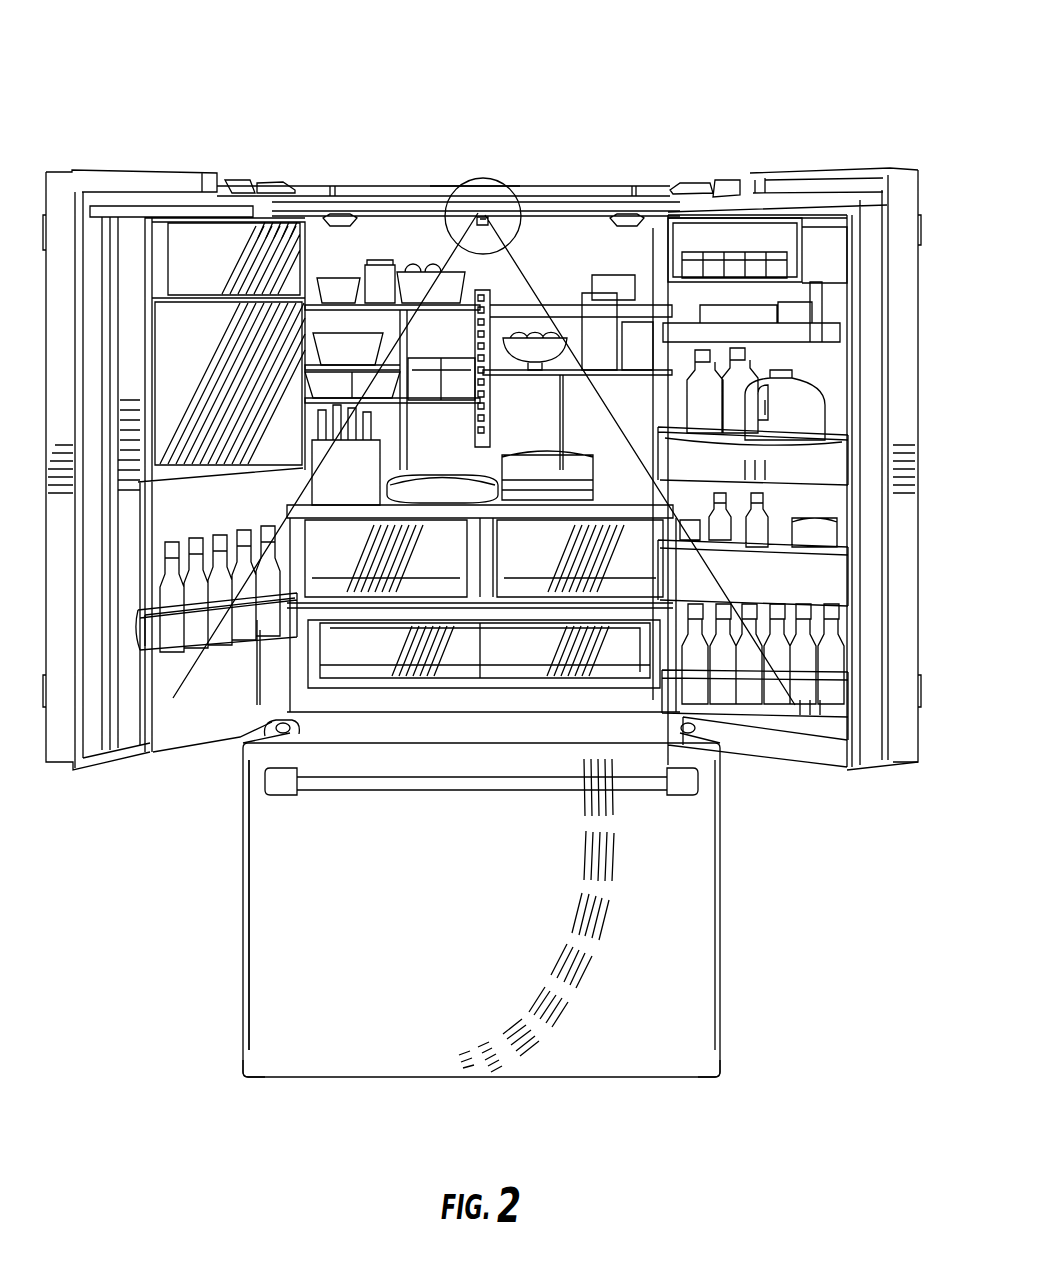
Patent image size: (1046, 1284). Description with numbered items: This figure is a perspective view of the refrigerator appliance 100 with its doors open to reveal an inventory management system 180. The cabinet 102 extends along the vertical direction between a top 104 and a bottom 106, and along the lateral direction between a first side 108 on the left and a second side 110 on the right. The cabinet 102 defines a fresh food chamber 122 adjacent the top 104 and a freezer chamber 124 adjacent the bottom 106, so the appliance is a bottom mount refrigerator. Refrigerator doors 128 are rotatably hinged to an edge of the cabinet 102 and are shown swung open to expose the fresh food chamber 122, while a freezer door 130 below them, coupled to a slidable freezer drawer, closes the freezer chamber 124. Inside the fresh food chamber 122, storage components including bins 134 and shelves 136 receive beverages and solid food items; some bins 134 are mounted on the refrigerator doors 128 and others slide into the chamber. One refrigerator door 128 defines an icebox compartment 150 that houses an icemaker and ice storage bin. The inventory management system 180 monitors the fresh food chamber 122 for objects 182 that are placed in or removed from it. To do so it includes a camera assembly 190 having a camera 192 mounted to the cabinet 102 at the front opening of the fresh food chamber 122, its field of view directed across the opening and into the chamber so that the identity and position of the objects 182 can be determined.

The refrigerator appliance 100 is at (860, 103).
The cabinet 102 is at (650, 192).
The top 104 is at (274, 423).
The bottom 106 is at (345, 1083).
The first side 108 is at (243, 1083).
The second side 110 is at (717, 1083).
The fresh food chamber 122 is at (578, 262).
The freezer chamber 124 is at (348, 892).
The refrigerator doors 128 is at (905, 565).
The freezer door 130 is at (510, 938).
The bins 134 is at (547, 562).
The shelves 136 is at (333, 300).
The icebox compartment 150 is at (210, 285).
The inventory management system 180 is at (472, 158).
The objects 182 is at (380, 285).
The camera assembly 190 is at (493, 173).
The camera 192 is at (486, 221).